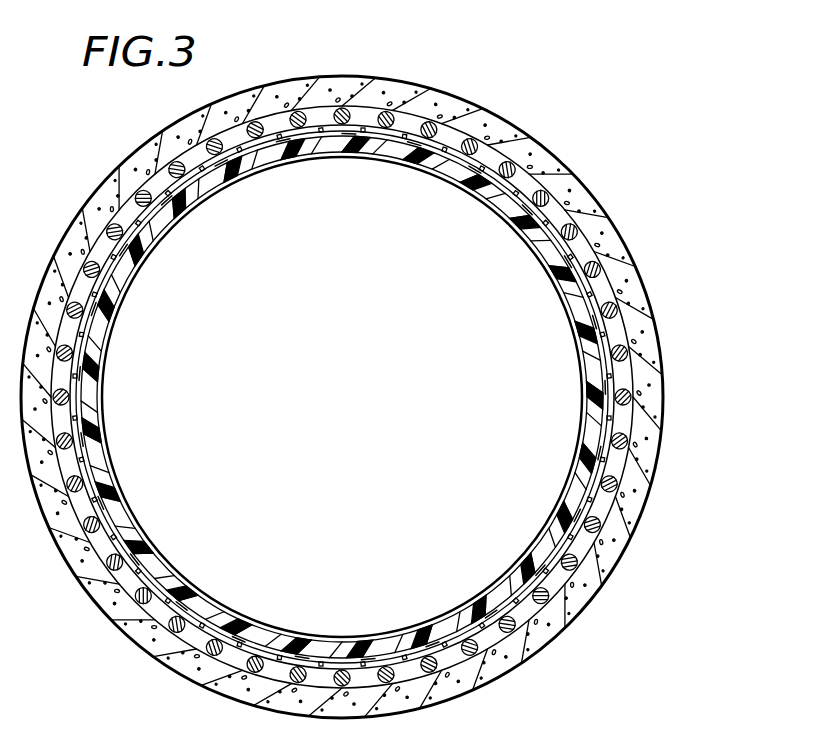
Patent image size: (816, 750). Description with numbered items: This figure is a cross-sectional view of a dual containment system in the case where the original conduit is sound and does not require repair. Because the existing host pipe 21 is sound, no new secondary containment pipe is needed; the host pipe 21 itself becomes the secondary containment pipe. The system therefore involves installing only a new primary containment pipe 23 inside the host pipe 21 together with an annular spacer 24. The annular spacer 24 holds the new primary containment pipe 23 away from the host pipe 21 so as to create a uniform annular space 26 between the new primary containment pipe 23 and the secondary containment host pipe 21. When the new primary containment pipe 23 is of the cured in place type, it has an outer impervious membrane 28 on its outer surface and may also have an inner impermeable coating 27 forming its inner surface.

The host pipe 21 is at (143, 148).
The new primary containment pipe 23 is at (208, 608).
The annular spacer 24 is at (552, 207).
The annular space 26 is at (627, 428).
The inner impermeable coating 27 is at (102, 420).
The outer impervious membrane 28 is at (592, 295).